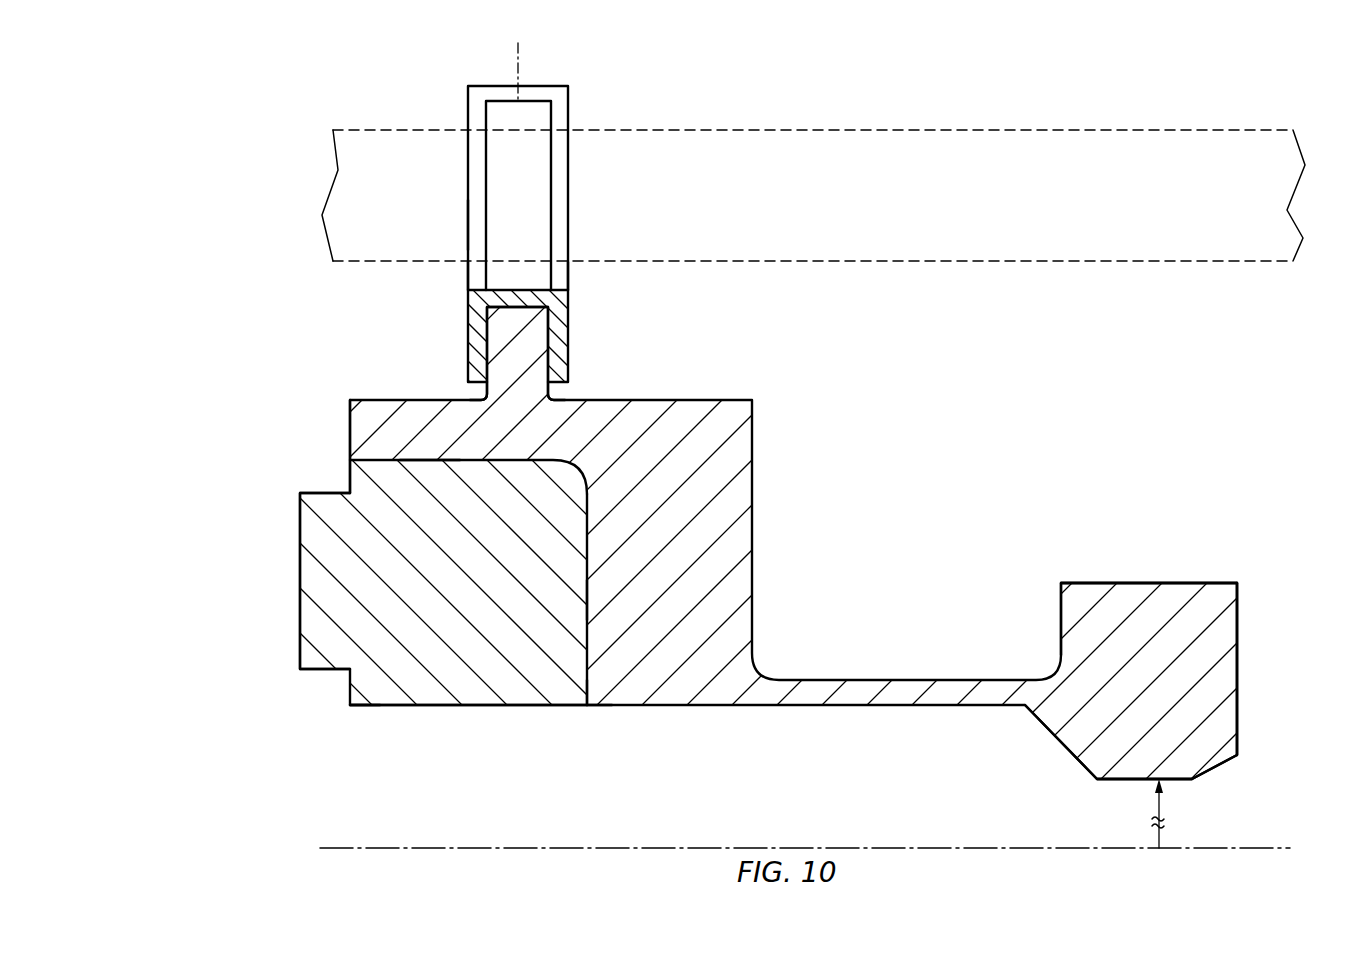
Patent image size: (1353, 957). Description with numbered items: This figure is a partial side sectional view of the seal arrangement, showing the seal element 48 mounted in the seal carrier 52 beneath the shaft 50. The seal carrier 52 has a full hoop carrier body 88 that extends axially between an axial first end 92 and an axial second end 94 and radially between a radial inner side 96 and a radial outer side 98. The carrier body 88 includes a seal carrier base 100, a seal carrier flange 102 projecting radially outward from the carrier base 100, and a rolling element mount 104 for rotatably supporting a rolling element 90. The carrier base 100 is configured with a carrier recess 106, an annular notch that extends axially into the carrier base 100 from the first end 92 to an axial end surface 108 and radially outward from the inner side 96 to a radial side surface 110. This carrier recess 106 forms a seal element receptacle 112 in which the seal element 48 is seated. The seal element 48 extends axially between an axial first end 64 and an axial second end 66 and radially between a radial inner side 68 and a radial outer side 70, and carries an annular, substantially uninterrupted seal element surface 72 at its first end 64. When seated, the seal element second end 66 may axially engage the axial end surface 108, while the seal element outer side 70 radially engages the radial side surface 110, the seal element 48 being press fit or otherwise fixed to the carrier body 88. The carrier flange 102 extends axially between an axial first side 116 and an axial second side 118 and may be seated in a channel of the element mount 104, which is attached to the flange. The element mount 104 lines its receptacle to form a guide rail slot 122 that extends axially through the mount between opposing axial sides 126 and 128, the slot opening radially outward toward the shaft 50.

The seal element 48 is at (334, 731).
The shaft 50 is at (1233, 120).
The seal carrier 52 is at (1202, 532).
The axial first end 64 is at (429, 560).
The axial second end 66 is at (588, 545).
The radial inner side 68 is at (468, 705).
The radial outer side 70 is at (510, 458).
The seal element surface 72 is at (300, 580).
The carrier body 88 is at (1113, 565).
The rolling element 90 is at (563, 173).
The axial first end 92 is at (349, 433).
The axial second end 94 is at (1237, 630).
The radial inner side 96 is at (1192, 779).
The radial outer side 98 is at (550, 86).
The seal carrier base 100 is at (766, 390).
The seal carrier flange 102 is at (562, 341).
The rolling element mount 104 is at (581, 96).
The carrier recess 106 is at (655, 706).
The axial end surface 108 is at (587, 600).
The radial side surface 110 is at (427, 462).
The seal element receptacle 112 is at (598, 690).
The axial first side 116 is at (483, 392).
The axial second side 118 is at (548, 391).
The guide rail slot 122 is at (464, 225).
The axial side 126 is at (468, 276).
The axial side 128 is at (568, 273).